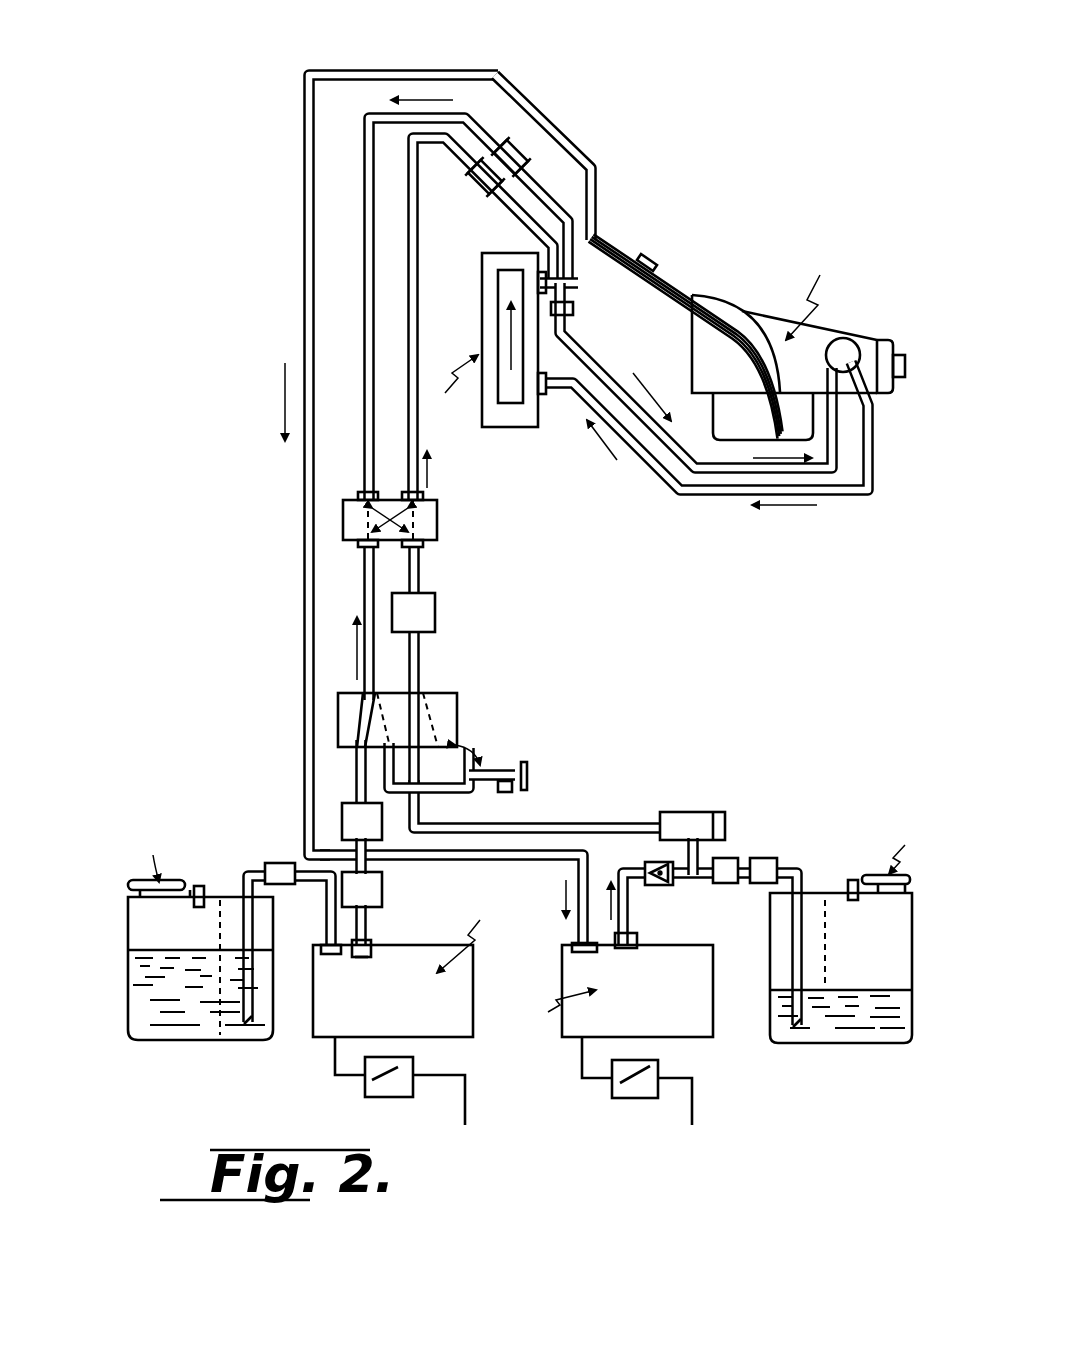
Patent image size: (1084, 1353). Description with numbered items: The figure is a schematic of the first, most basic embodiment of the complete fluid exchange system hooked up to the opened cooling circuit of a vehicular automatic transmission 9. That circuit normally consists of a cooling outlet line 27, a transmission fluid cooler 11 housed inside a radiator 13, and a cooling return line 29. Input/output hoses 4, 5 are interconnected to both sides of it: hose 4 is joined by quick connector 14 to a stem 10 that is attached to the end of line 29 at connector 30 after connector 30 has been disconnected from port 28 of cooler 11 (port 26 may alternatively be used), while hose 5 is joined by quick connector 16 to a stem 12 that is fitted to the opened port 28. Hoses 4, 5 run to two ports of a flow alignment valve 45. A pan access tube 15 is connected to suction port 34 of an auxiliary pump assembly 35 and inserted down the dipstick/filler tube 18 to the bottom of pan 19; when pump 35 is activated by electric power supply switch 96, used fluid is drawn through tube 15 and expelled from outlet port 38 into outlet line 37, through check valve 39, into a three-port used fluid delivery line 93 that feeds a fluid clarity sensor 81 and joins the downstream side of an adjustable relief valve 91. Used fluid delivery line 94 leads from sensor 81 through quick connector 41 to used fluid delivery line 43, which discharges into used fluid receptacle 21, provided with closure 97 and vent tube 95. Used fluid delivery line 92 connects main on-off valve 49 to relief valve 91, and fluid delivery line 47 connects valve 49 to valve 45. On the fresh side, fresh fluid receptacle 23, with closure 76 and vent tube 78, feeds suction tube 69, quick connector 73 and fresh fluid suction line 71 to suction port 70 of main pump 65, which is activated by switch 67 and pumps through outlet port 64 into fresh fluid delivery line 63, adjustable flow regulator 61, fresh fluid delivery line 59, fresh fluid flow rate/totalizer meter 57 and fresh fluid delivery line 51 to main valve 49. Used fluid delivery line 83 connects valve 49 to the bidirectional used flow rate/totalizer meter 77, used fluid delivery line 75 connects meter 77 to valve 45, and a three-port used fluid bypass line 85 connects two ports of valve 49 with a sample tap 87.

The input/output hose 4 is at (415, 322).
The input/output hose 5 is at (362, 304).
The transmission 9 is at (798, 322).
The stem 10 is at (543, 223).
The transmission fluid cooler 11 is at (512, 390).
The stem 12 is at (553, 190).
The radiator 13 is at (482, 340).
The quick connector 14 is at (482, 168).
The pan access tube 15 is at (548, 118).
The quick connector 16 is at (513, 145).
The dipstick/filler tube 18 is at (678, 290).
The pan 19 is at (725, 413).
The used fluid receptacle 21 is at (893, 940).
The fresh fluid receptacle 23 is at (172, 990).
The port 26 is at (545, 395).
The cooling outlet line 27 is at (691, 493).
The port 28 is at (535, 252).
The cooling return line 29 is at (660, 440).
The connector 30 is at (573, 311).
The auxiliary pump suction port 34 is at (565, 950).
The auxiliary pump assembly 35 is at (613, 991).
The outlet line 37 is at (629, 906).
The outlet port 38 is at (637, 948).
The check valve 39 is at (647, 865).
The quick connector 41 is at (770, 858).
The used fluid delivery line 43 is at (800, 878).
The flow alignment valve 45 is at (438, 513).
The fluid delivery line 47 is at (365, 600).
The main on-off valve 49 is at (452, 693).
The fresh fluid delivery line 51 is at (358, 780).
The fresh fluid flow rate/totalizer meter 57 is at (357, 815).
The fresh fluid delivery line 59 is at (372, 878).
The adjustable flow regulator 61 is at (375, 916).
The fresh fluid delivery line 63 is at (372, 930).
The outlet port 64 is at (358, 957).
The main pump 65 is at (403, 965).
The electric power supply switch 67 is at (413, 1063).
The suction tube 69 is at (243, 872).
The suction port 70 is at (320, 952).
The fresh fluid suction line 71 is at (318, 882).
The quick connector 73 is at (282, 863).
The used fluid delivery line 75 is at (418, 570).
The closure 76 is at (156, 861).
The used flow rate/totalizer meter 77 is at (437, 610).
The vent tube 78 is at (198, 884).
The fluid clarity sensor 81 is at (727, 858).
The used fluid delivery line 83 is at (418, 652).
The used fluid bypass line 85 is at (465, 750).
The sample tap 87 is at (525, 768).
The adjustable relief valve 91 is at (698, 812).
The used fluid delivery line 92 is at (560, 820).
The used fluid delivery line 93 is at (700, 878).
The used fluid delivery line 94 is at (744, 885).
The vent tube 95 is at (853, 880).
The electric power supply switch 96 is at (658, 1063).
The closure 97 is at (895, 853).